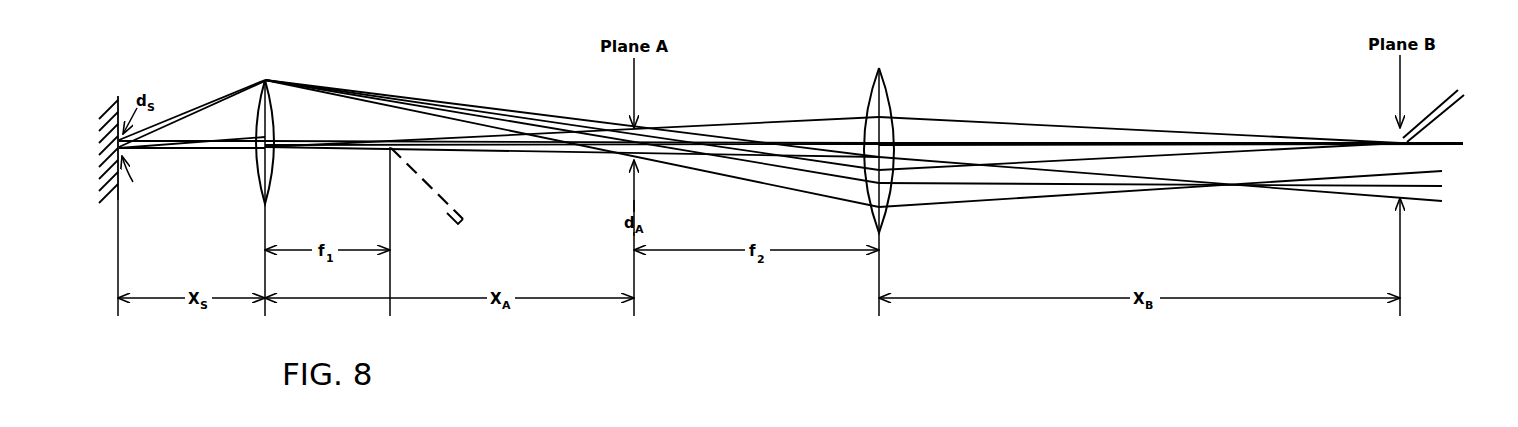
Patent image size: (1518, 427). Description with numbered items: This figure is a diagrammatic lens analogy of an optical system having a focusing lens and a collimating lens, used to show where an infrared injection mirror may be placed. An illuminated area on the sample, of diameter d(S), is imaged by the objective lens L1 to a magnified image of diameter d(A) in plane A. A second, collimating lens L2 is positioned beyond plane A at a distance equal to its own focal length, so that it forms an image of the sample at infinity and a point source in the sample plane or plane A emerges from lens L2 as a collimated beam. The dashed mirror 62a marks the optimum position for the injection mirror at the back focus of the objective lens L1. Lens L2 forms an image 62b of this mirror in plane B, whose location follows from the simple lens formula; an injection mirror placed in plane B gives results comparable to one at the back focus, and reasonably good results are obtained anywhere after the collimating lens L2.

The dashed mirror 62a is at (452, 198).
The image of the injection mirror 62b is at (1438, 116).
The objective lens L1 is at (265, 79).
The collimating lens L2 is at (878, 67).